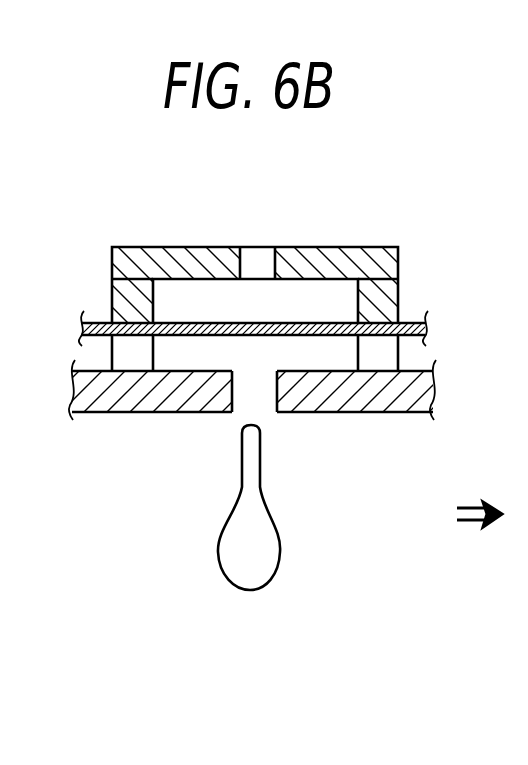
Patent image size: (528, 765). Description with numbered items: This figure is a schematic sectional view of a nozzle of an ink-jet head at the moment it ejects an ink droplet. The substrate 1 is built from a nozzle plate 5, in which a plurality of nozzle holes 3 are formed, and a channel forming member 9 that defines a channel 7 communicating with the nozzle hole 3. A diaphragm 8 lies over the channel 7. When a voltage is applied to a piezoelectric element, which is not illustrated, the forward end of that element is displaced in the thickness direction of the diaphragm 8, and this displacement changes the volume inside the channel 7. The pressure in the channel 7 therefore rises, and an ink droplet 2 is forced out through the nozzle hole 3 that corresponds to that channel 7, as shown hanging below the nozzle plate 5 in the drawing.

The substrate 1 is at (424, 302).
The ink droplet 2 is at (280, 547).
The nozzle hole 3 is at (274, 402).
The nozzle plate 5 is at (103, 412).
The channel 7 is at (187, 355).
The diaphragm 8 is at (300, 323).
The channel forming member 9 is at (399, 355).